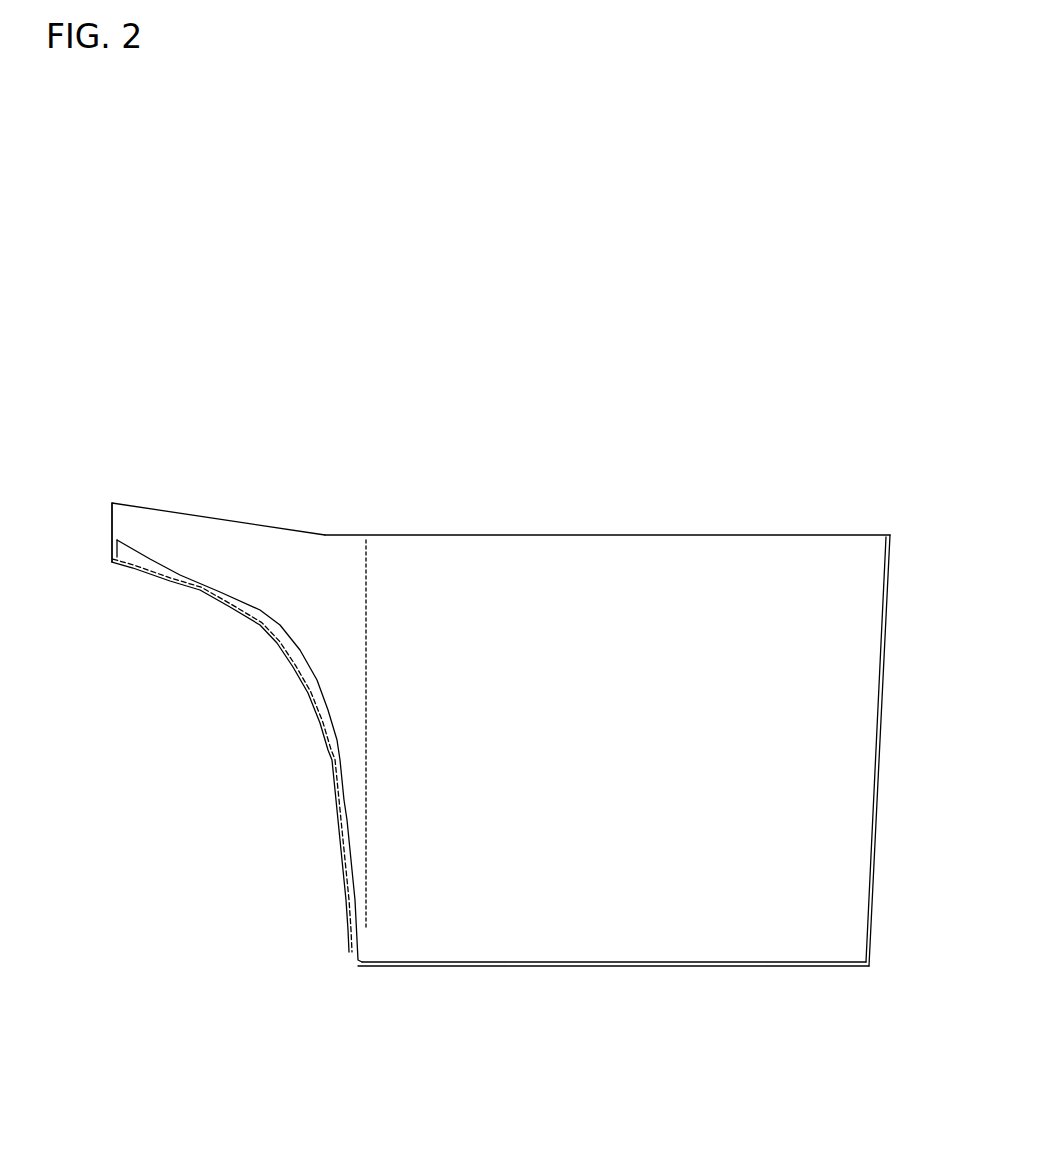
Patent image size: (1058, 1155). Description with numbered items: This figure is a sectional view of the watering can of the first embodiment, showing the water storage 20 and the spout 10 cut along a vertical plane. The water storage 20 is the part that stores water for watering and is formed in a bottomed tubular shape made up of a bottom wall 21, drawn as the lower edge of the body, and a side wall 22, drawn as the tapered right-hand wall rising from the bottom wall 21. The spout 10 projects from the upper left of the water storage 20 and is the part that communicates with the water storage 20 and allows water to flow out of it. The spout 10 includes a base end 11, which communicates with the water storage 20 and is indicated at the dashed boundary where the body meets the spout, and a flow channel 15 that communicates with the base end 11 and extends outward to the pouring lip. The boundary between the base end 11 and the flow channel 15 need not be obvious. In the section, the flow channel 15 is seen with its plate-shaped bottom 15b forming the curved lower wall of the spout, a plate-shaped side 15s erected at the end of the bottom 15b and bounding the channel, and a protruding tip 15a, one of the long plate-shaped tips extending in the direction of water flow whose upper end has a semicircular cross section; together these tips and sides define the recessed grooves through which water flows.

The spout 10 is at (398, 367).
The base end 11 is at (361, 527).
The flow channel 15 is at (290, 518).
The protruding tip 15a is at (125, 547).
The side 15s is at (236, 570).
The bottom 15b is at (198, 600).
The water storage 20 is at (735, 447).
The bottom wall 21 is at (606, 967).
The side wall 22 is at (880, 765).